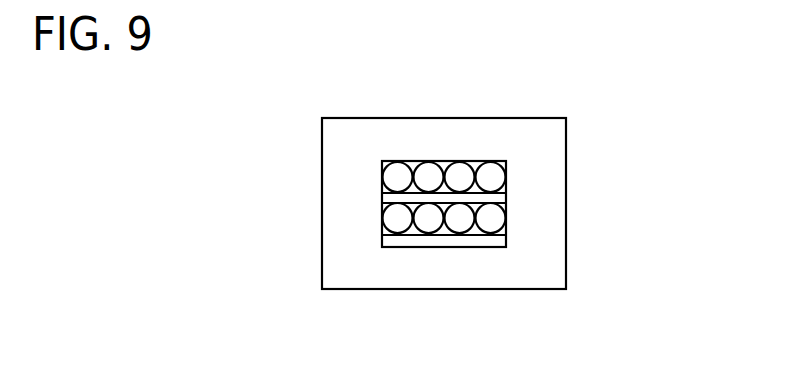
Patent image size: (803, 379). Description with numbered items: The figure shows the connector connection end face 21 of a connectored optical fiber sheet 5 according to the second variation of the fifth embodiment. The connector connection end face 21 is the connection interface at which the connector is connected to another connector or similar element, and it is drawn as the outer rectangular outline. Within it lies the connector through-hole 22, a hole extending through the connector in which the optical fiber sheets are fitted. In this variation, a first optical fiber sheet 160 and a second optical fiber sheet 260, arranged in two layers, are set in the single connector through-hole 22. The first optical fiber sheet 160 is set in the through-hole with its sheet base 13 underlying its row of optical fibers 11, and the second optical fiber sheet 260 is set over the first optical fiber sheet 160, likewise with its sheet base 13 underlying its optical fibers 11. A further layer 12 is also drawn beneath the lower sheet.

The connectored optical fiber sheet 5 is at (460, 88).
The optical fibers 11 is at (469, 163).
The base layer 12 is at (392, 242).
The sheet base 13 is at (498, 200).
The connector connection end face 21 is at (557, 273).
The connector through-hole 22 is at (507, 210).
The first optical fiber sheet 160 is at (255, 195).
The second optical fiber sheet 260 is at (642, 133).